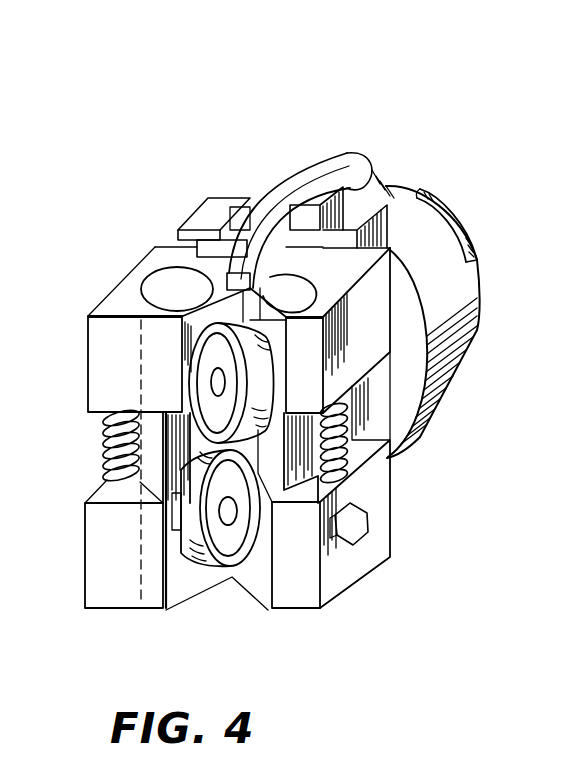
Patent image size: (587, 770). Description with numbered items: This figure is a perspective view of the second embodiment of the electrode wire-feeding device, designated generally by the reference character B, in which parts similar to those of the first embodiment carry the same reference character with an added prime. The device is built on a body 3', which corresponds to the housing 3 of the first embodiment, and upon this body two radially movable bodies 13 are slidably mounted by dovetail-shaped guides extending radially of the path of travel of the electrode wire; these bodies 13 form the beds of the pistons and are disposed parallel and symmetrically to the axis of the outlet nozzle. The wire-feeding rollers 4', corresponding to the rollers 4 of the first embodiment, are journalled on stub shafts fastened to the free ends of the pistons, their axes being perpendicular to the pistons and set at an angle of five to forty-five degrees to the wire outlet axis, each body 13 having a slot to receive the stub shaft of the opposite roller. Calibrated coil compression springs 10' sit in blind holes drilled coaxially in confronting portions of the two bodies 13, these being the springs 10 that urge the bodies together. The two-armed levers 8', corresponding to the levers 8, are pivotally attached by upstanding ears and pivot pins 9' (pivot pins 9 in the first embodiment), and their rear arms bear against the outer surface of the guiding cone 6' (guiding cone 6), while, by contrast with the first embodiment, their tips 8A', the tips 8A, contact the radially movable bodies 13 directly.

The second embodiment of the electrode wire-feeding device B is at (264, 110).
The radially movable bodies 13 is at (145, 268).
The body 3' is at (277, 197).
The tips of the two-armed levers 8A' is at (183, 234).
The two-armed levers 8' is at (310, 202).
The pivot pins 9' is at (429, 202).
The guiding cone 6' is at (463, 322).
The wire-feeding rollers 4' is at (150, 484).
The calibrated coil compression springs 10' is at (239, 453).
The housing 3 is at (277, 197).
The bracket lower step 8A is at (183, 234).
The two-armed levers 8 is at (310, 202).
The pivot pins 9 is at (429, 202).
The guiding cone 6 is at (463, 322).
The roller 4 is at (150, 484).
The springs 10 is at (239, 453).